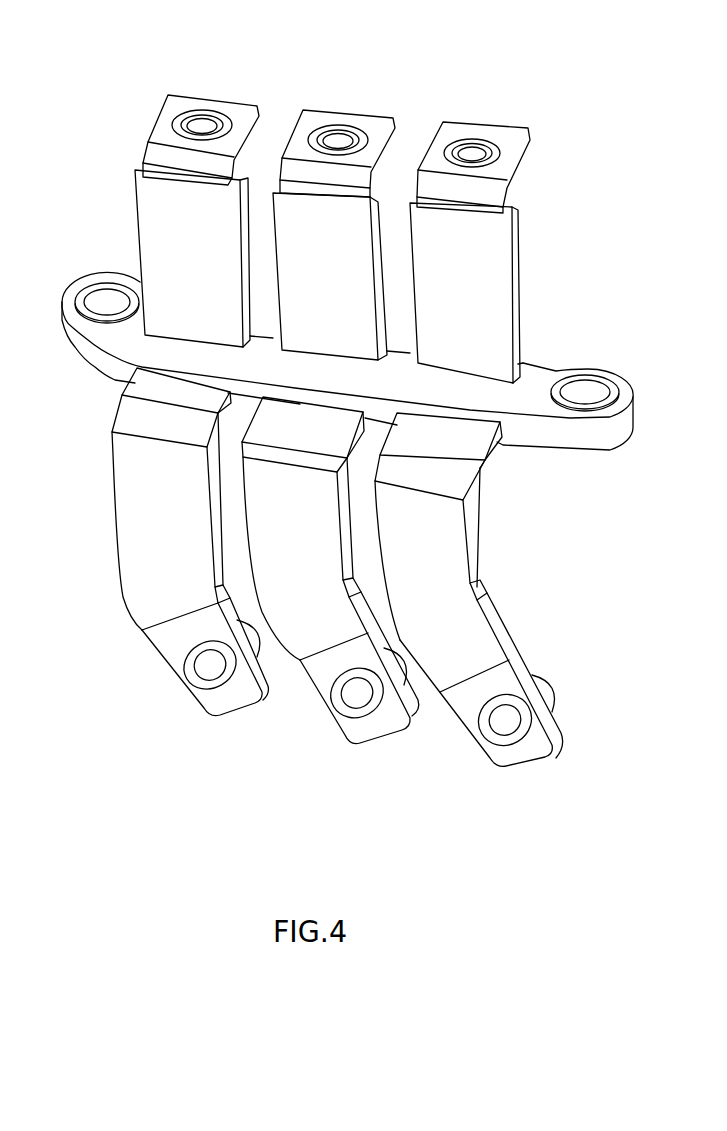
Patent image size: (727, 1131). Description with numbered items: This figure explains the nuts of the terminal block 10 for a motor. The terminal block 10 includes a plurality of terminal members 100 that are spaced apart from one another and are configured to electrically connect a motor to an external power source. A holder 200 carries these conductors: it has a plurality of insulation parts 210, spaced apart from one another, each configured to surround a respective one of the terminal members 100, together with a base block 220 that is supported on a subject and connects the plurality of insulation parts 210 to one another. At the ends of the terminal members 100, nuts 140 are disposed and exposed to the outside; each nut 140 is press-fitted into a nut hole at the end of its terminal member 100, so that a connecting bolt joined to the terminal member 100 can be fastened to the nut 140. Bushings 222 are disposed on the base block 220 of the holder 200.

The terminal block 10 is at (98, 93).
The terminal member 100 is at (214, 80).
The nut 140 is at (202, 128).
The holder 200 is at (511, 463).
The insulation part 210 is at (173, 628).
The base block 220 is at (540, 377).
The bushing 222 is at (585, 388).